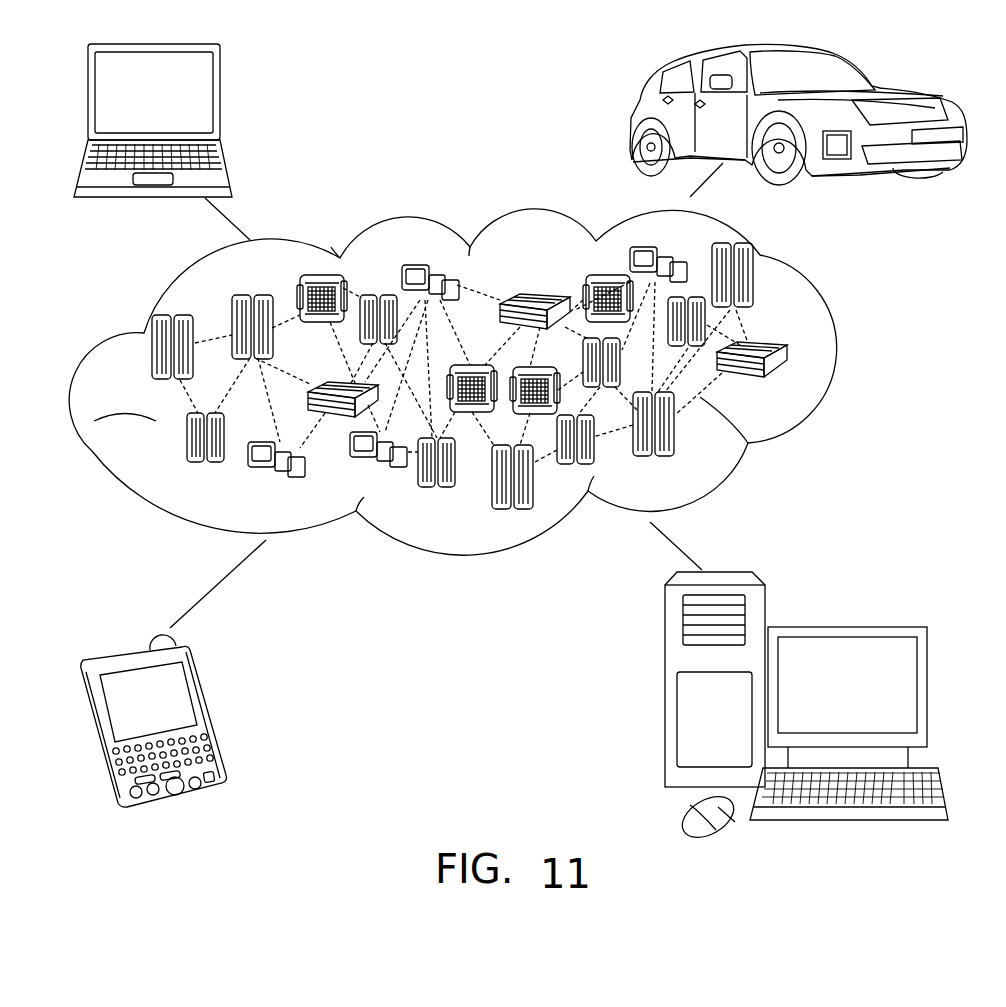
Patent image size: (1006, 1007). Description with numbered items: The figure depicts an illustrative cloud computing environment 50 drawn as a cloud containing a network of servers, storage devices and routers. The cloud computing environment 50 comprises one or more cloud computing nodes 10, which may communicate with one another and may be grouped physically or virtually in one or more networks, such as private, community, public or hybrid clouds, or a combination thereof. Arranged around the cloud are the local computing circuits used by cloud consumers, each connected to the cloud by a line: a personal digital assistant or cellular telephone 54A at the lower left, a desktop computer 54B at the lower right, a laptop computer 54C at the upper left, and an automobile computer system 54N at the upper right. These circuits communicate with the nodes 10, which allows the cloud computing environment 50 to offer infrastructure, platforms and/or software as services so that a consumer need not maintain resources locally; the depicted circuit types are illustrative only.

The cloud computing node 10 is at (520, 376).
The cloud computing environment 50 is at (845, 358).
The personal digital assistant (PDA) or cellular telephone 54A is at (208, 713).
The desktop computer 54B is at (843, 627).
The laptop computer 54C is at (220, 102).
The automobile computer system 54N is at (638, 117).